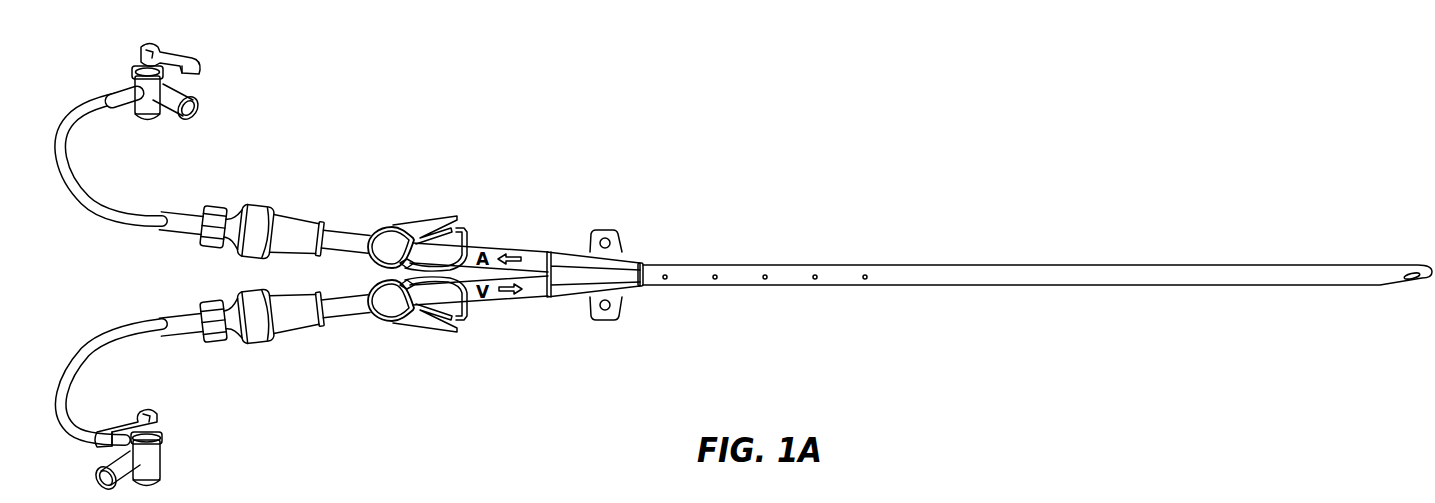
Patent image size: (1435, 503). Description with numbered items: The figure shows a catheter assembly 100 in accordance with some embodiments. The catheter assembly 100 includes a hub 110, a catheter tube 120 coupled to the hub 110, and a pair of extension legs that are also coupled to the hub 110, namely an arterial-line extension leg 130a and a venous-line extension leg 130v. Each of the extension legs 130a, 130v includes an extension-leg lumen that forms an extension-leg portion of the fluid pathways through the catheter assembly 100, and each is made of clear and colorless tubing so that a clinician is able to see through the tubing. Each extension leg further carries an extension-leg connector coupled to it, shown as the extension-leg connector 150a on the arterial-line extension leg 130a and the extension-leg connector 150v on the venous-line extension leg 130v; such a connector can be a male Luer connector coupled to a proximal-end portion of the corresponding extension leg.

The catheter assembly 100 is at (1423, 329).
The hub 110 is at (562, 252).
The catheter tube 120 is at (1143, 263).
The arterial-line extension leg 130a is at (468, 240).
The venous-line extension leg 130v is at (472, 316).
The extension-leg connector 150a is at (254, 221).
The extension-leg connector 150v is at (257, 336).